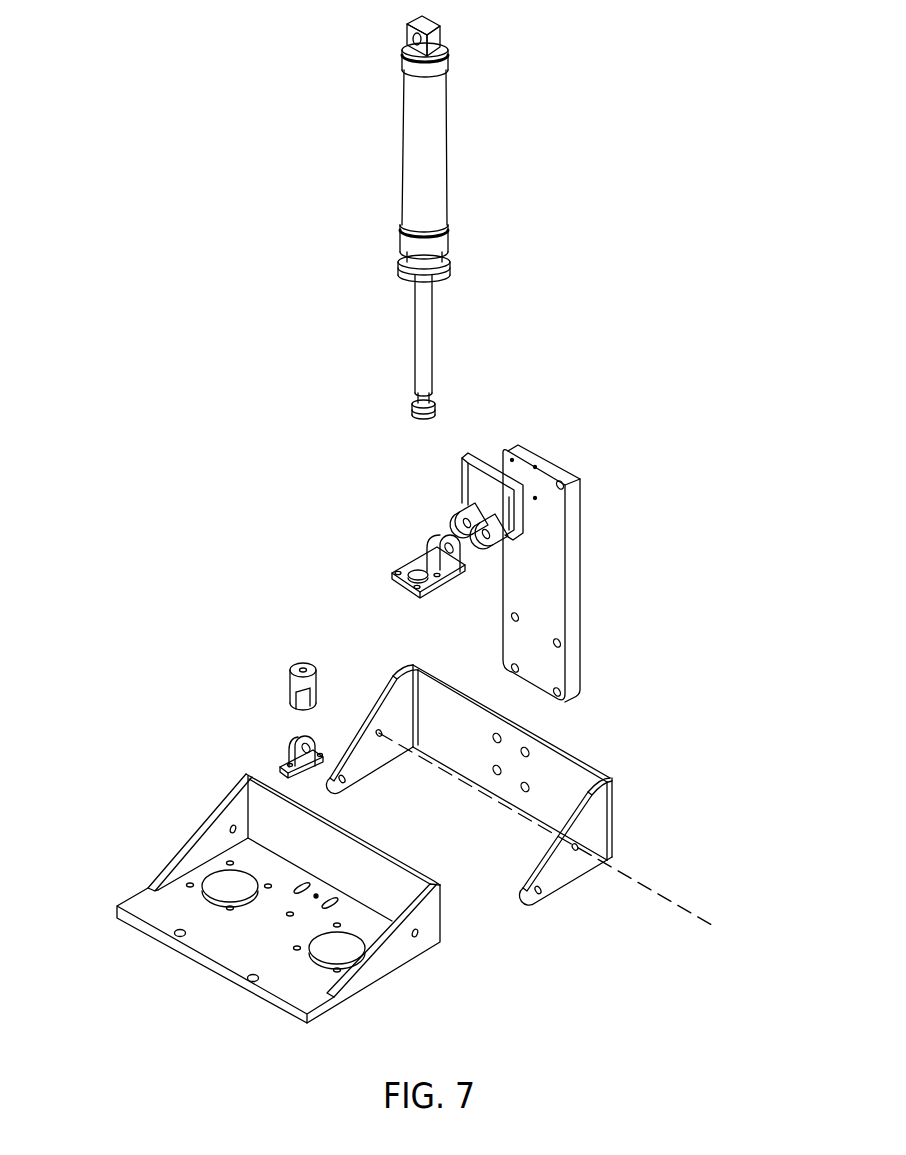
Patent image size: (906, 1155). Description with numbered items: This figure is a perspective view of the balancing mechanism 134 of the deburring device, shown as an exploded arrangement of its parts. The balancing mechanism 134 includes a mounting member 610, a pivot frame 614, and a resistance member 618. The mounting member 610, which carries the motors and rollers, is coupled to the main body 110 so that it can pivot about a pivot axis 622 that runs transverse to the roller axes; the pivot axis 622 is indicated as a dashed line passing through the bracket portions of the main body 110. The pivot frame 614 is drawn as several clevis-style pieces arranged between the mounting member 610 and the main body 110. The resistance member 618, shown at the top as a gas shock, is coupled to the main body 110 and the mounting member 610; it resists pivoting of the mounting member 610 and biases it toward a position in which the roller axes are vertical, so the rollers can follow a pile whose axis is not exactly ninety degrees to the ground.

The balancing mechanism 134 is at (186, 120).
The resistance member 618 is at (436, 160).
The main body 110 is at (576, 476).
The pivot frame 614 is at (455, 508).
The mounting member 610 is at (137, 902).
The pivot axis 622 is at (680, 907).